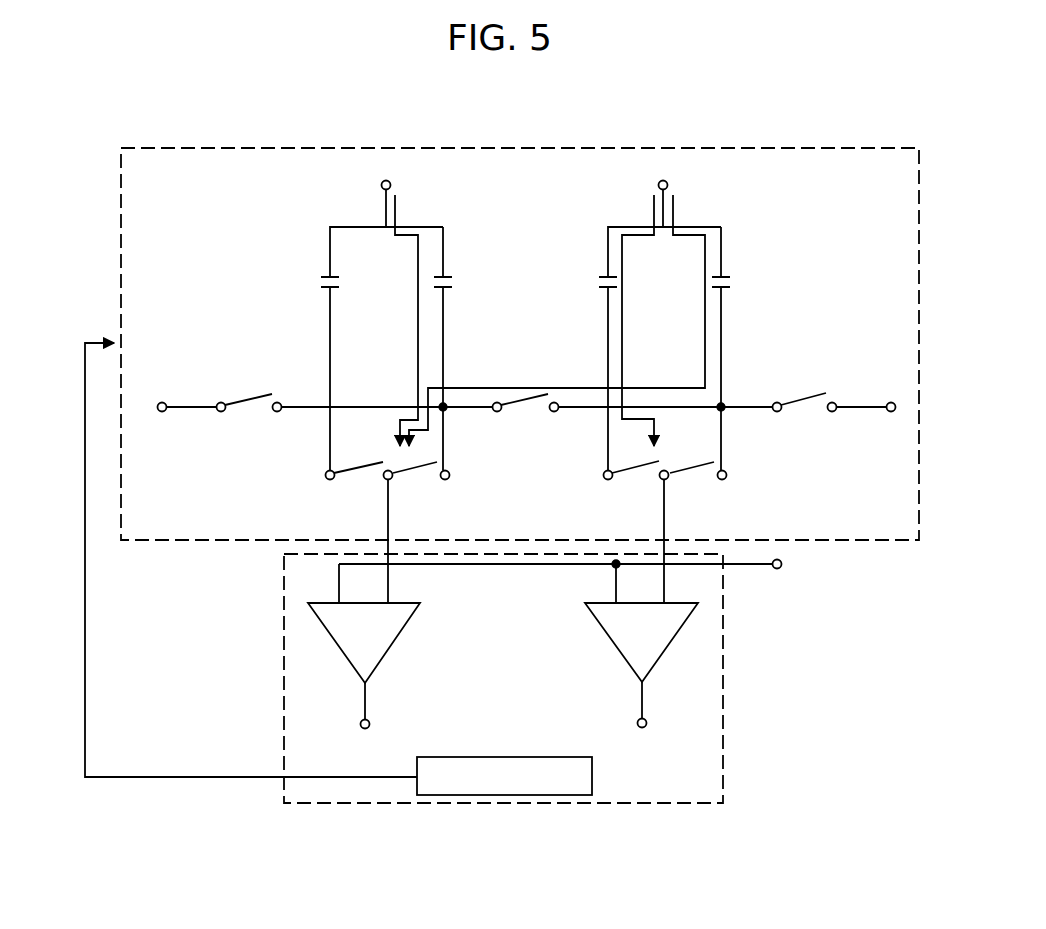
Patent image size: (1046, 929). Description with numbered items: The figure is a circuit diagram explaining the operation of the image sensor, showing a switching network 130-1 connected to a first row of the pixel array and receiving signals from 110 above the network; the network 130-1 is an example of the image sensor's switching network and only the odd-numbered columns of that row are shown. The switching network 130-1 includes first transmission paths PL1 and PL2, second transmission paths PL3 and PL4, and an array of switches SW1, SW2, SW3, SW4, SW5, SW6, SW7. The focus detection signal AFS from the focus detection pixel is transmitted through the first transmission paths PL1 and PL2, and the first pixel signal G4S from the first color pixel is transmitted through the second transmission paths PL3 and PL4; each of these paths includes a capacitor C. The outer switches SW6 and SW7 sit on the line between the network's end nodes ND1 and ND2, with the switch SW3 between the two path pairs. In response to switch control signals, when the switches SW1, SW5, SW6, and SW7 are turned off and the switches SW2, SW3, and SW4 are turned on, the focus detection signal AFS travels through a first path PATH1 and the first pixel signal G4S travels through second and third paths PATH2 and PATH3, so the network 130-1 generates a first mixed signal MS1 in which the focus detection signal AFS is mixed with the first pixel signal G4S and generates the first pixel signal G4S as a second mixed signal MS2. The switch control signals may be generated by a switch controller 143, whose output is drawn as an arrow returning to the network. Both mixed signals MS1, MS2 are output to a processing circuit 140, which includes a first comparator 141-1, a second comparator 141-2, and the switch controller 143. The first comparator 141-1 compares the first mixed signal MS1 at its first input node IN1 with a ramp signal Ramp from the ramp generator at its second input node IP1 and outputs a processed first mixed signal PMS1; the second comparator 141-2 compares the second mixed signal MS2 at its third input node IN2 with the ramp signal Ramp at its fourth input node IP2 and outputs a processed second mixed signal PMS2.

The switching network 130-1 is at (795, 133).
The pixel array 110 is at (662, 145).
The processing circuit 140 is at (725, 657).
The first comparator 141-1 is at (418, 660).
The second comparator 141-2 is at (612, 647).
The switch controller 143 is at (505, 757).
The focus detection signal AFS is at (386, 193).
The first pixel signal G4S is at (664, 193).
The first path PATH1 is at (400, 212).
The second path PATH2 is at (677, 212).
The third path PATH3 is at (650, 212).
The first transmission path PL1 is at (328, 253).
The first transmission path PL2 is at (446, 253).
The second transmission path PL3 is at (606, 253).
The second transmission path PL4 is at (724, 253).
The capacitor C is at (525, 283).
The switch SW1 is at (359, 482).
The switch SW2 is at (421, 482).
The switch SW3 is at (633, 414).
The switch SW4 is at (636, 481).
The switch SW5 is at (698, 482).
The switch SW6 is at (355, 414).
The switch SW7 is at (830, 414).
The first node ND1 is at (179, 396).
The second node ND2 is at (890, 396).
The first mixed signal MS1 is at (411, 542).
The second mixed signal MS2 is at (687, 542).
The second input node IP1 is at (322, 583).
The first input node IN1 is at (413, 586).
The fourth input node IP2 is at (599, 583).
The third input node IN2 is at (689, 586).
The processed first mixed signal PMS1 is at (366, 718).
The processed second mixed signal PMS2 is at (643, 718).
The ramp signal Ramp is at (591, 565).